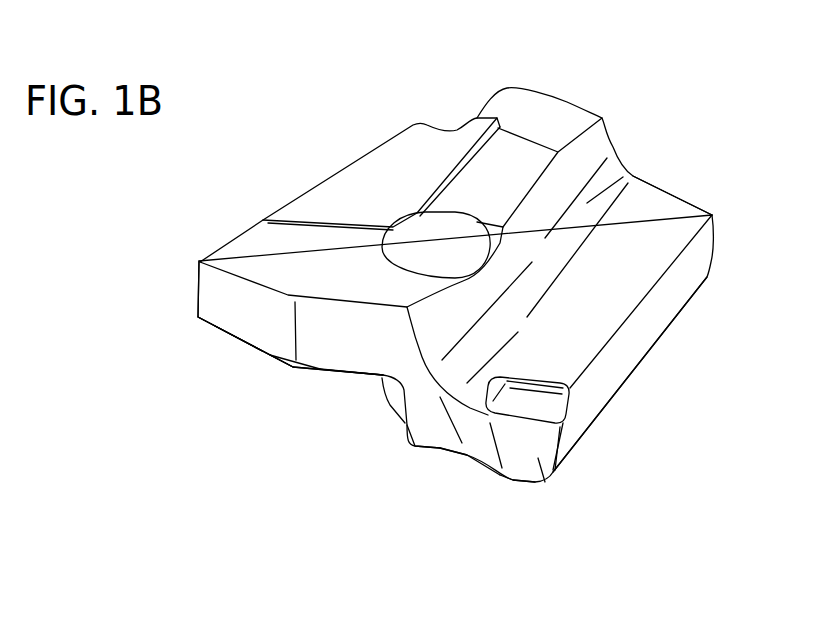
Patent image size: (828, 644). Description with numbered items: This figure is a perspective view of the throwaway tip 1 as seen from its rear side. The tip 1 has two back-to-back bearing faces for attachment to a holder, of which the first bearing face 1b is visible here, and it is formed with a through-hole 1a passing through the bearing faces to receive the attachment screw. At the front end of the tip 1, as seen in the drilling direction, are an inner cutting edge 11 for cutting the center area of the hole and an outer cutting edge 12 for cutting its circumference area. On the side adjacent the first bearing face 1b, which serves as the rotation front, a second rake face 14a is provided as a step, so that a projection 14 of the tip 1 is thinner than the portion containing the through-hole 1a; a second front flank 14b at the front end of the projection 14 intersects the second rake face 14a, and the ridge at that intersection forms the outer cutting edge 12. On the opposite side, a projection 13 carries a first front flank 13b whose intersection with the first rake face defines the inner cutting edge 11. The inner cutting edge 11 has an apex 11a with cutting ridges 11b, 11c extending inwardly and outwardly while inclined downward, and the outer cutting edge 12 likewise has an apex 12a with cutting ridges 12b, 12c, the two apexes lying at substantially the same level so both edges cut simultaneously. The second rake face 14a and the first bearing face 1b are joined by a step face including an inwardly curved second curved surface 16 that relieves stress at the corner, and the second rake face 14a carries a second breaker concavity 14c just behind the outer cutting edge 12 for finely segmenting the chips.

The throwaway tip 1 is at (327, 96).
The through-hole 1a is at (448, 230).
The first bearing face 1b is at (510, 163).
The inner cutting edge 11 is at (348, 484).
The apex 11a is at (293, 368).
The cutting ridge 11b is at (338, 373).
The cutting ridge 11c is at (240, 342).
The outer cutting edge 12 is at (537, 572).
The apex 12a is at (485, 420).
The cutting ridge 12b is at (472, 405).
The cutting ridge 12c is at (528, 420).
The projection 13 is at (291, 190).
The first front flank 13b is at (222, 298).
The projection 14 is at (733, 245).
The second rake face 14a is at (638, 230).
The second front flank 14b is at (543, 483).
The second breaker concavity 14c is at (545, 405).
The second curved surface 16 is at (620, 178).